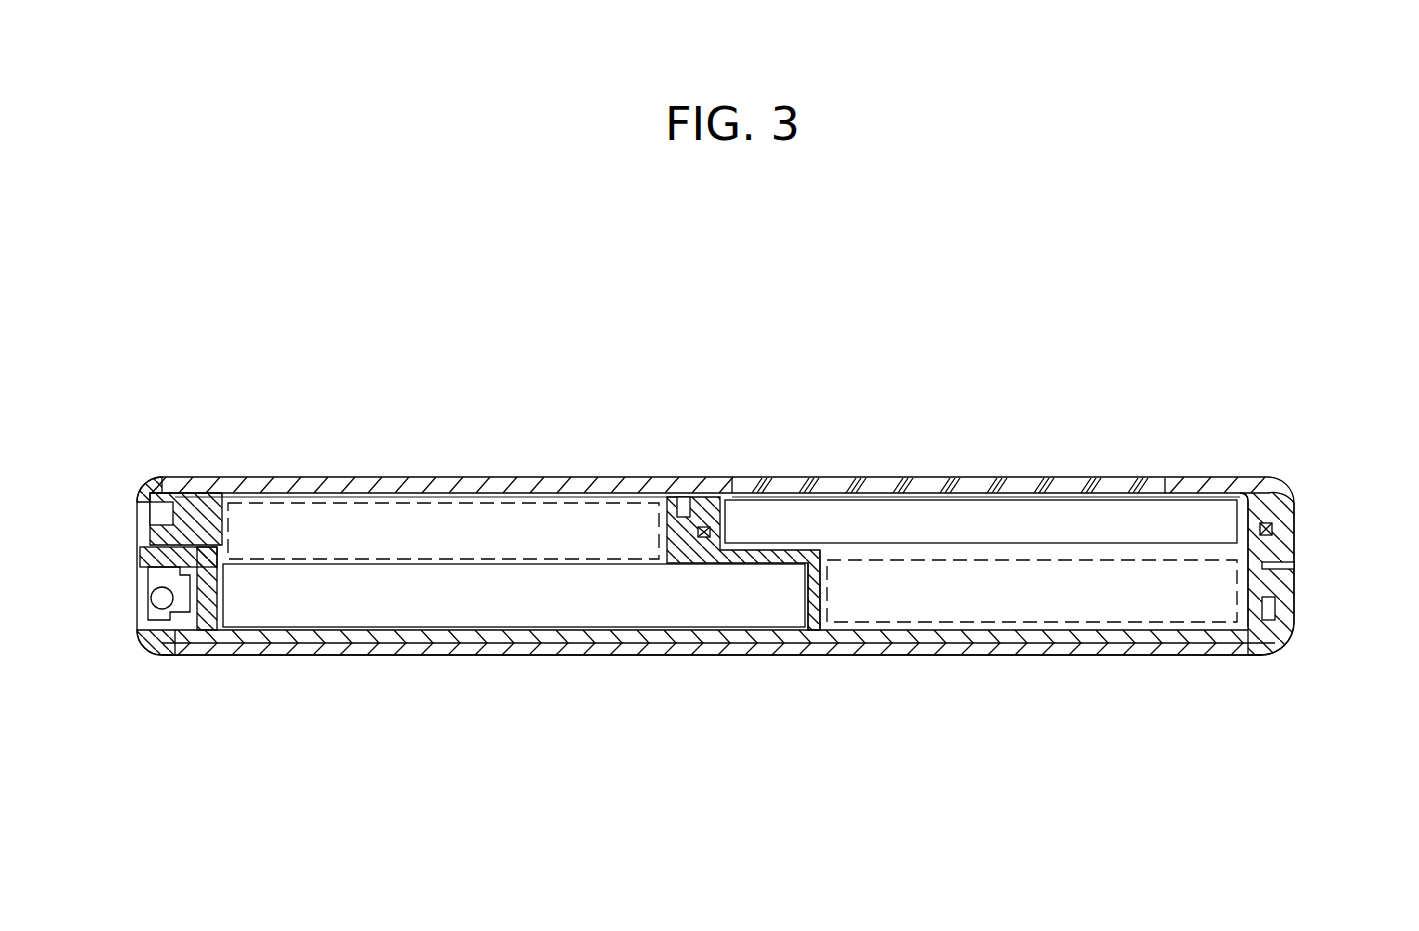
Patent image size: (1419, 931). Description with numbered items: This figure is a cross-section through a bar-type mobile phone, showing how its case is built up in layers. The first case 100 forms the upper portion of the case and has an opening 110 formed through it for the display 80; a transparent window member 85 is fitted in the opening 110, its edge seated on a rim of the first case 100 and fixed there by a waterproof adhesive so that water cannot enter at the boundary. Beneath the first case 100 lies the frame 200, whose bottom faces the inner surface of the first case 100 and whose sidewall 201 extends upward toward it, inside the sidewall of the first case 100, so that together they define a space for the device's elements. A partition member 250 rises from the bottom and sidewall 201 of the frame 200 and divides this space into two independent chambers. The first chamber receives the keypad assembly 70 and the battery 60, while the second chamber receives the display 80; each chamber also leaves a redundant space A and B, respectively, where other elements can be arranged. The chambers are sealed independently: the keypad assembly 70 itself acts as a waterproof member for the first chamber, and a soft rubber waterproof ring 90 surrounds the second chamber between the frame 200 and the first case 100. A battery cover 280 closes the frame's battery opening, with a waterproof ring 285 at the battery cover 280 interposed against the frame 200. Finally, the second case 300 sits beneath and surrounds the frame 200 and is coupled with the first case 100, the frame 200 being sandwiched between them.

The first case 100 is at (260, 478).
The keypad assembly 70 is at (438, 480).
The redundant space A is at (309, 512).
The battery 60 is at (320, 608).
The opening 110 is at (782, 481).
The window member 85 is at (967, 478).
The display 80 is at (1213, 481).
The redundant space B is at (1060, 622).
The sidewall 201 is at (1263, 570).
The waterproof ring 90 is at (1263, 528).
The battery cover 280 is at (143, 557).
The waterproof ring 285 is at (193, 627).
The frame 200 is at (810, 640).
The partition member 250 is at (820, 588).
The second case 300 is at (1140, 658).